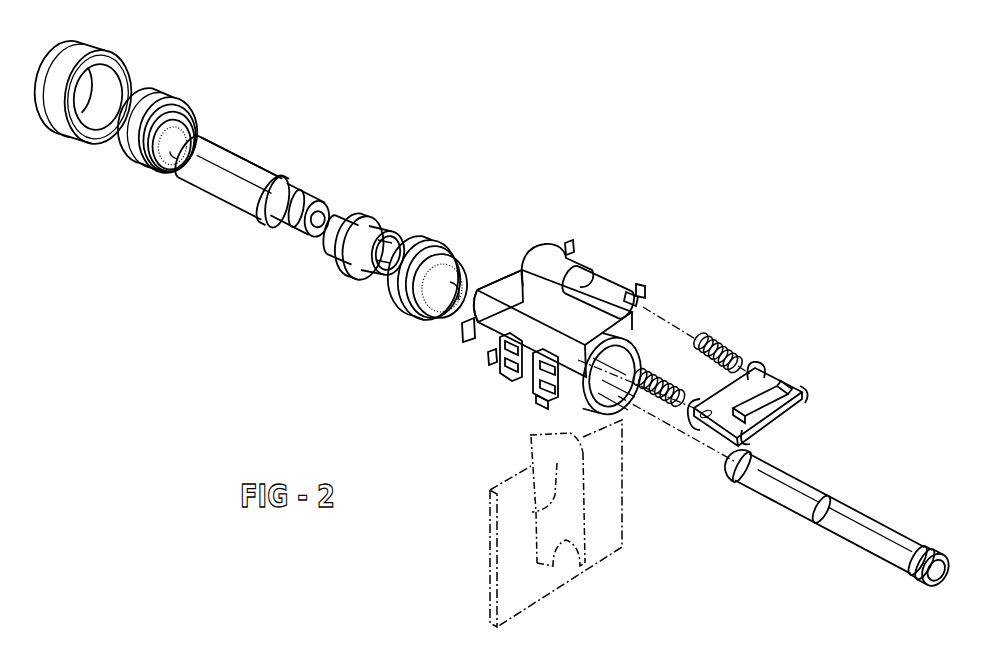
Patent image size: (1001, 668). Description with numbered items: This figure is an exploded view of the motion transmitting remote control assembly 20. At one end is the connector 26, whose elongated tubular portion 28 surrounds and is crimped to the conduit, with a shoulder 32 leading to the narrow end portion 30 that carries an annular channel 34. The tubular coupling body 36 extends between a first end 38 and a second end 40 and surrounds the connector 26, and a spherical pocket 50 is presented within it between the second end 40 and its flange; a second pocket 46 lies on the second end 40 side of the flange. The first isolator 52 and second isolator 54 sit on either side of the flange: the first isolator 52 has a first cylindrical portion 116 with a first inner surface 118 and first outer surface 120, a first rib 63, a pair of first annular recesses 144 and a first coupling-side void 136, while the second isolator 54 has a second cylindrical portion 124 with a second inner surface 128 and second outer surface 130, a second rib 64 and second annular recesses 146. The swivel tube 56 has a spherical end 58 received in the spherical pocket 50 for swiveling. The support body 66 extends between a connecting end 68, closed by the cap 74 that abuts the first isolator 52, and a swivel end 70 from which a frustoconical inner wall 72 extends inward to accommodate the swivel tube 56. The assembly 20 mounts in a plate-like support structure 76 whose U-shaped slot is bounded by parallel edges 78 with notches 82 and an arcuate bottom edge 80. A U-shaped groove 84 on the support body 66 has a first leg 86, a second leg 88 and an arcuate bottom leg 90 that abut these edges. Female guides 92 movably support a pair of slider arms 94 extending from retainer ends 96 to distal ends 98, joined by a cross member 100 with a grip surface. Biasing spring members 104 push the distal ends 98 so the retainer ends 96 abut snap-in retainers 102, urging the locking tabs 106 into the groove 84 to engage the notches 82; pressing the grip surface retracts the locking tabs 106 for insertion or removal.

The motion transmitting remote control assembly 20 is at (759, 215).
The connector 26 is at (280, 150).
The elongated tubular portion 28 is at (240, 130).
The narrow end portion 30 is at (280, 228).
The shoulder 32 is at (303, 185).
The annular channel 34 is at (322, 190).
The coupling body 36 is at (355, 214).
The first end 38 is at (322, 245).
The second end 40 is at (377, 280).
The second pocket 46 is at (385, 240).
The spherical pocket 50 is at (400, 243).
The first isolator 52 is at (162, 97).
The second isolator 54 is at (458, 246).
The swivel tube 56 is at (803, 512).
The spherical end 58 is at (728, 485).
The first rib 63 is at (178, 96).
The second rib 64 is at (420, 318).
The support body 66 is at (552, 252).
The connecting end 68 is at (460, 325).
The swivel end 70 is at (643, 310).
The frustoconical inner wall 72 is at (622, 413).
The cap 74 is at (66, 46).
The support structure 76 is at (528, 620).
The parallel edges 78 is at (570, 433).
The bottom edge 80 is at (573, 548).
The notches 82 is at (592, 470).
The groove 84 is at (567, 256).
The first leg 86 is at (503, 372).
The second leg 88 is at (602, 267).
The bottom leg 90 is at (512, 377).
The female guides 92 is at (523, 278).
The slider arms 94 is at (776, 374).
The retainer ends 96 is at (806, 396).
The distal ends 98 is at (755, 364).
The cross member 100 is at (770, 412).
The snap-in retainers 102 is at (636, 300).
The biasing spring members 104 is at (660, 372).
The locking tabs 106 is at (704, 420).
The first cylindrical portion 116 is at (200, 108).
The first inner surface 118 is at (178, 176).
The first outer surface 120 is at (192, 98).
The second cylindrical portion 124 is at (445, 320).
The second inner surface 128 is at (515, 280).
The second outer surface 130 is at (400, 305).
The first coupling-side void 136 is at (158, 172).
The first annular recesses 144 is at (150, 97).
The second annular recesses 146 is at (430, 242).